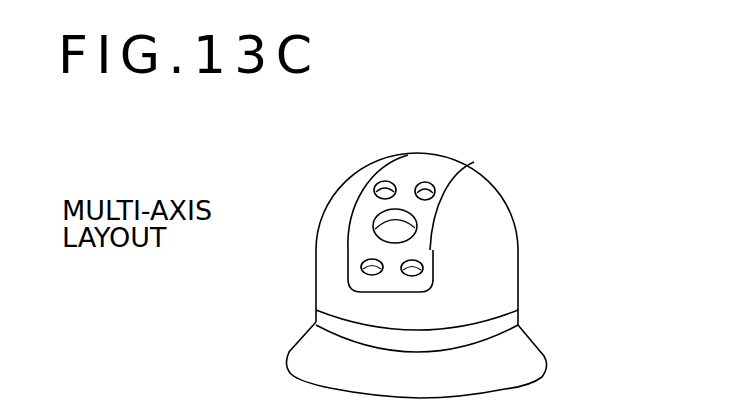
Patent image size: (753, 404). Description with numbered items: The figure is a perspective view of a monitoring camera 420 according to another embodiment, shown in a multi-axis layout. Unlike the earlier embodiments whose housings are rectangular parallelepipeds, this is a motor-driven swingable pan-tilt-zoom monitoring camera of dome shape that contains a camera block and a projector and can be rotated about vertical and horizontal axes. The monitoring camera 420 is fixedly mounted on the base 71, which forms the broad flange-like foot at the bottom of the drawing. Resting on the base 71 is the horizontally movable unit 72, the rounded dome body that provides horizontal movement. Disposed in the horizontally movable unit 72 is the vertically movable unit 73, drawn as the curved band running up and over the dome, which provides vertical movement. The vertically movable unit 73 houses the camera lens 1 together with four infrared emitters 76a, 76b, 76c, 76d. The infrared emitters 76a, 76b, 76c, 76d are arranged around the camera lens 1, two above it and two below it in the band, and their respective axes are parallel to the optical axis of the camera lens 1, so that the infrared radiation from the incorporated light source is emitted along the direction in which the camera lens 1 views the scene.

The monitoring camera 420 is at (600, 147).
The horizontally movable unit 72 is at (497, 295).
The base 71 is at (518, 352).
The vertically movable unit 73 is at (423, 167).
The camera lens 1 is at (395, 232).
The infrared emitter 76a is at (378, 184).
The infrared emitter 76b is at (433, 184).
The infrared emitter 76c is at (364, 263).
The infrared emitter 76d is at (420, 266).